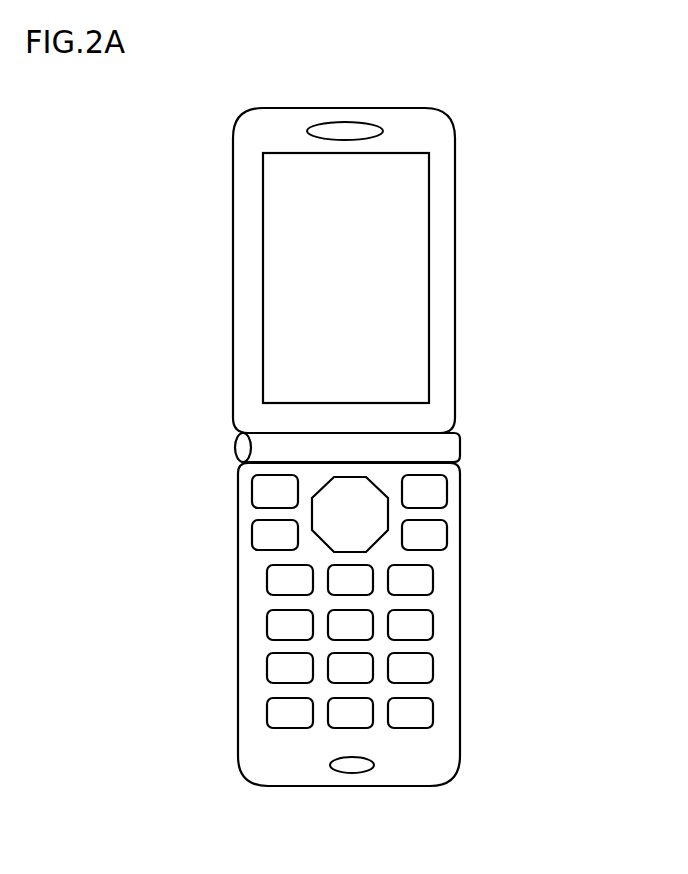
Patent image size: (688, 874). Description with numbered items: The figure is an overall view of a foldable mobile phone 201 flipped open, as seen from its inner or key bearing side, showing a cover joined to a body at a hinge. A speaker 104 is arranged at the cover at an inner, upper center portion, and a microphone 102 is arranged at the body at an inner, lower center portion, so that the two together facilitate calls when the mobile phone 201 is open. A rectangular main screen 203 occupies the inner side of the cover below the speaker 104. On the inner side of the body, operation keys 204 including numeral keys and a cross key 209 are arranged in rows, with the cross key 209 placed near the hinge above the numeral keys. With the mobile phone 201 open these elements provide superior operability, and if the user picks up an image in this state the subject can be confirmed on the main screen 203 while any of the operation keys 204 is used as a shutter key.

The foldable mobile phone 201 is at (571, 115).
The main screen 203 is at (429, 228).
The speaker 104 is at (340, 122).
The cross key 209 is at (362, 493).
The operation keys 204 is at (435, 742).
The microphone 102 is at (348, 773).